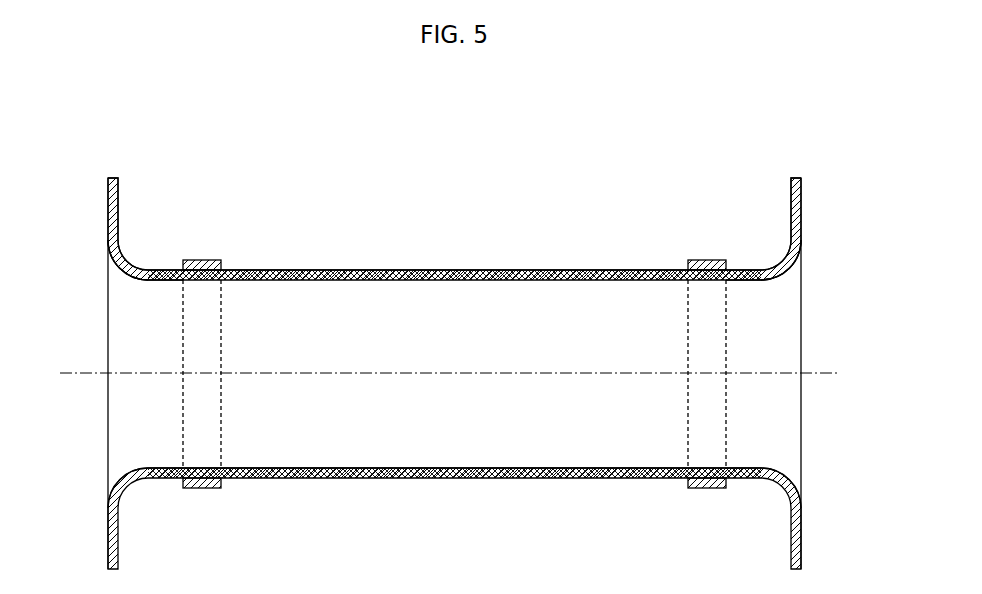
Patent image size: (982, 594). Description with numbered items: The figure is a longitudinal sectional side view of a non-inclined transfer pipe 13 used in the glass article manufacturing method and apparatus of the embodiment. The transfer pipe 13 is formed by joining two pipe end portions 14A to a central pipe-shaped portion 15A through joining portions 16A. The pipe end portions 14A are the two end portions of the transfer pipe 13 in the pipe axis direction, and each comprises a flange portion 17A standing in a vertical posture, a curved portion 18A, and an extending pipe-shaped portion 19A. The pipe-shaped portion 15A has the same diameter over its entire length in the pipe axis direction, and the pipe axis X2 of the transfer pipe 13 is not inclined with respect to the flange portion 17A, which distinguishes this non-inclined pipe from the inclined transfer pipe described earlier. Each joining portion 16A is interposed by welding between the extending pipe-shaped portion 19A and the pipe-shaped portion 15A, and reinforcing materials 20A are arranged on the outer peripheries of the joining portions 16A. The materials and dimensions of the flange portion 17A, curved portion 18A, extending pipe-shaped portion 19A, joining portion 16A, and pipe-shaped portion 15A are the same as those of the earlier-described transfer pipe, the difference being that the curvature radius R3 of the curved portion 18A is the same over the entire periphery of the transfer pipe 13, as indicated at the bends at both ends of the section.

The transfer pipe 13 is at (558, 192).
The pipe end portion 14A is at (137, 202).
The pipe-shaped portion 15A is at (449, 259).
The joining portion 16A is at (204, 274).
The flange portion 17A is at (108, 207).
The curved portion 18A is at (112, 279).
The extending pipe-shaped portion 19A is at (151, 281).
The reinforcing material 20A is at (197, 261).
The curvature radius R3 is at (129, 260).
The pipe axis X2 is at (824, 366).